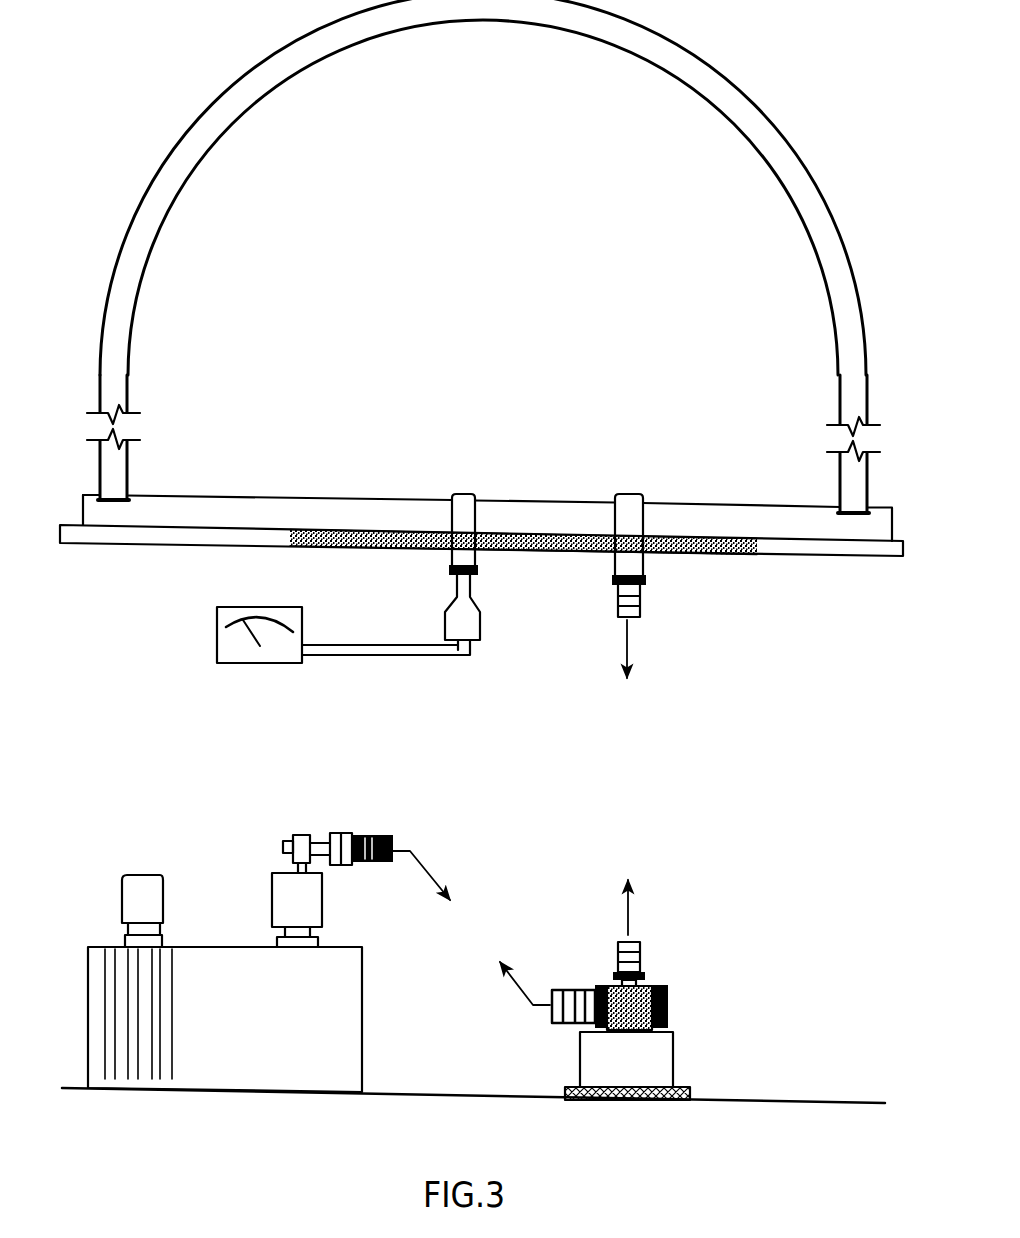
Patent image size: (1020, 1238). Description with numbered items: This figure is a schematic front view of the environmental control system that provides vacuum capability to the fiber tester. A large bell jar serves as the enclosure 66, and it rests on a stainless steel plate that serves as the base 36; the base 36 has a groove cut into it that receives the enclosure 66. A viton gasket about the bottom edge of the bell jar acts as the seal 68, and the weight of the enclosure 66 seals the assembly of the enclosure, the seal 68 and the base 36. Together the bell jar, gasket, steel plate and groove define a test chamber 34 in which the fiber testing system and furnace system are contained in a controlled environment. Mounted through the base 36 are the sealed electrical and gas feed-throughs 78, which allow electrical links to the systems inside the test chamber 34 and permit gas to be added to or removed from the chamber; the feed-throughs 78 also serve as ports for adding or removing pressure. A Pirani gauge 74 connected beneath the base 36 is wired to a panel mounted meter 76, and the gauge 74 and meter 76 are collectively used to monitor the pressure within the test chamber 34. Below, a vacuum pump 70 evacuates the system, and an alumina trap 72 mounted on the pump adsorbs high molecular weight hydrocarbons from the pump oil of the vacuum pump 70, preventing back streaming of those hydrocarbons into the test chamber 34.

The test chamber 34 is at (503, 250).
The base 36 is at (268, 512).
The enclosure 66 is at (117, 335).
The seal 68 is at (97, 468).
The vacuum pump 70 is at (345, 985).
The alumina trap 72 is at (283, 890).
The Pirani gauge 74 is at (465, 630).
The panel mounted meter 76 is at (292, 656).
The sealed electrical and gas feed-throughs 78 is at (610, 551).